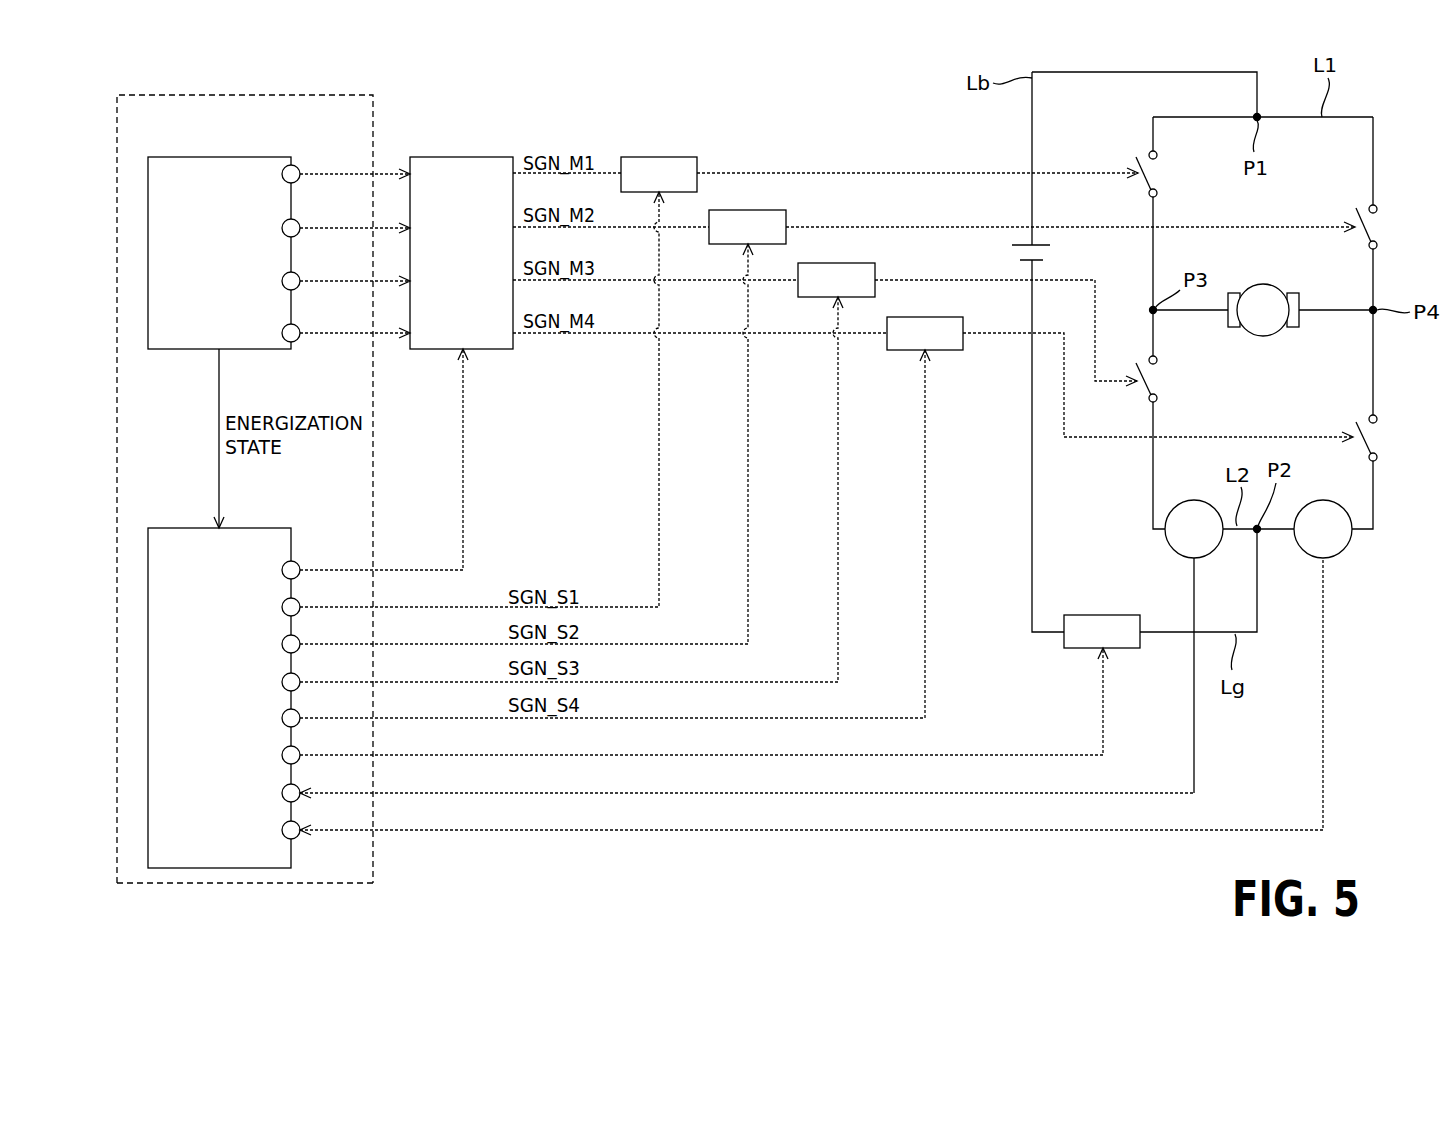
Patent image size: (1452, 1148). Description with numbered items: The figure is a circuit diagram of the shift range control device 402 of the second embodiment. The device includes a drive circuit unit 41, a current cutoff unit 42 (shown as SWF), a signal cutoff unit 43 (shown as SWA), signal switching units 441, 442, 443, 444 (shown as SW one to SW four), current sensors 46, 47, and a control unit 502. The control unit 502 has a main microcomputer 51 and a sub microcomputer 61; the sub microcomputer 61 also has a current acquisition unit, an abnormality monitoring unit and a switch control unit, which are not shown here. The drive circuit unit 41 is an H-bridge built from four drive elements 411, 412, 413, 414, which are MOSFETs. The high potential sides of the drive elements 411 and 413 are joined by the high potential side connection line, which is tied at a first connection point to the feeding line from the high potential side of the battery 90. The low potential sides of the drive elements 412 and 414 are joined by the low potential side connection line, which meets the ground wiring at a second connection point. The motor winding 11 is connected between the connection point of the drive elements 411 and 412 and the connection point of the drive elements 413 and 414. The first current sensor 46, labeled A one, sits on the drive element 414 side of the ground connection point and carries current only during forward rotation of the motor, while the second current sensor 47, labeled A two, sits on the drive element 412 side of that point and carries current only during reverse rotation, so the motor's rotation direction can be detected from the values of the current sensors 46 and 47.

The control unit 502 is at (175, 95).
The shift range control device 402 is at (203, 895).
The main microcomputer 51 is at (172, 350).
The sub microcomputer 61 is at (178, 528).
The signal cutoff unit 43 is at (455, 157).
The signal switching unit 441 is at (672, 157).
The signal switching unit 442 is at (765, 210).
The signal switching unit 443 is at (855, 263).
The signal switching unit 444 is at (918, 317).
The drive element 411 is at (1157, 155).
The drive element 412 is at (1157, 398).
The drive element 413 is at (1377, 209).
The drive element 414 is at (1377, 419).
The battery 90 is at (1040, 244).
The motor winding 11 is at (1284, 334).
The second current sensor 47 is at (1168, 548).
The first current sensor 46 is at (1330, 558).
The drive circuit unit 41 is at (1380, 540).
The current cutoff unit 42 is at (1068, 648).